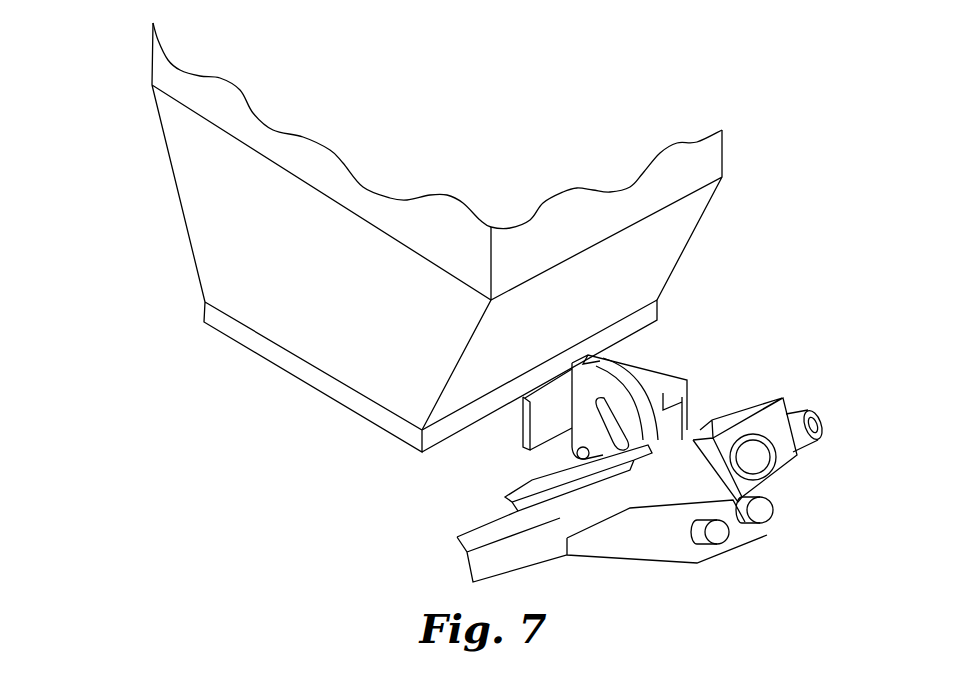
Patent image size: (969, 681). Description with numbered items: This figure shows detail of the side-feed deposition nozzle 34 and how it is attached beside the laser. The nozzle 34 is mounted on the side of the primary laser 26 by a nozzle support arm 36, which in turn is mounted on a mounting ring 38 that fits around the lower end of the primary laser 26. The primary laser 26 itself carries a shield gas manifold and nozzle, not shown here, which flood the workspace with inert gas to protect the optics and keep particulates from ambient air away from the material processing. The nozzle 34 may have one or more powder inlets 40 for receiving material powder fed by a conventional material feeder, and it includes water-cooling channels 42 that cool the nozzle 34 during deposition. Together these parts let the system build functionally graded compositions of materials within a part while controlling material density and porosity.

The primary laser 26 is at (203, 192).
The mounting ring 38 is at (268, 352).
The nozzle support arm 36 is at (685, 374).
The side-feed deposition nozzle 34 is at (602, 587).
The powder inlet 40 is at (813, 422).
The water-cooling channels 42 is at (717, 532).